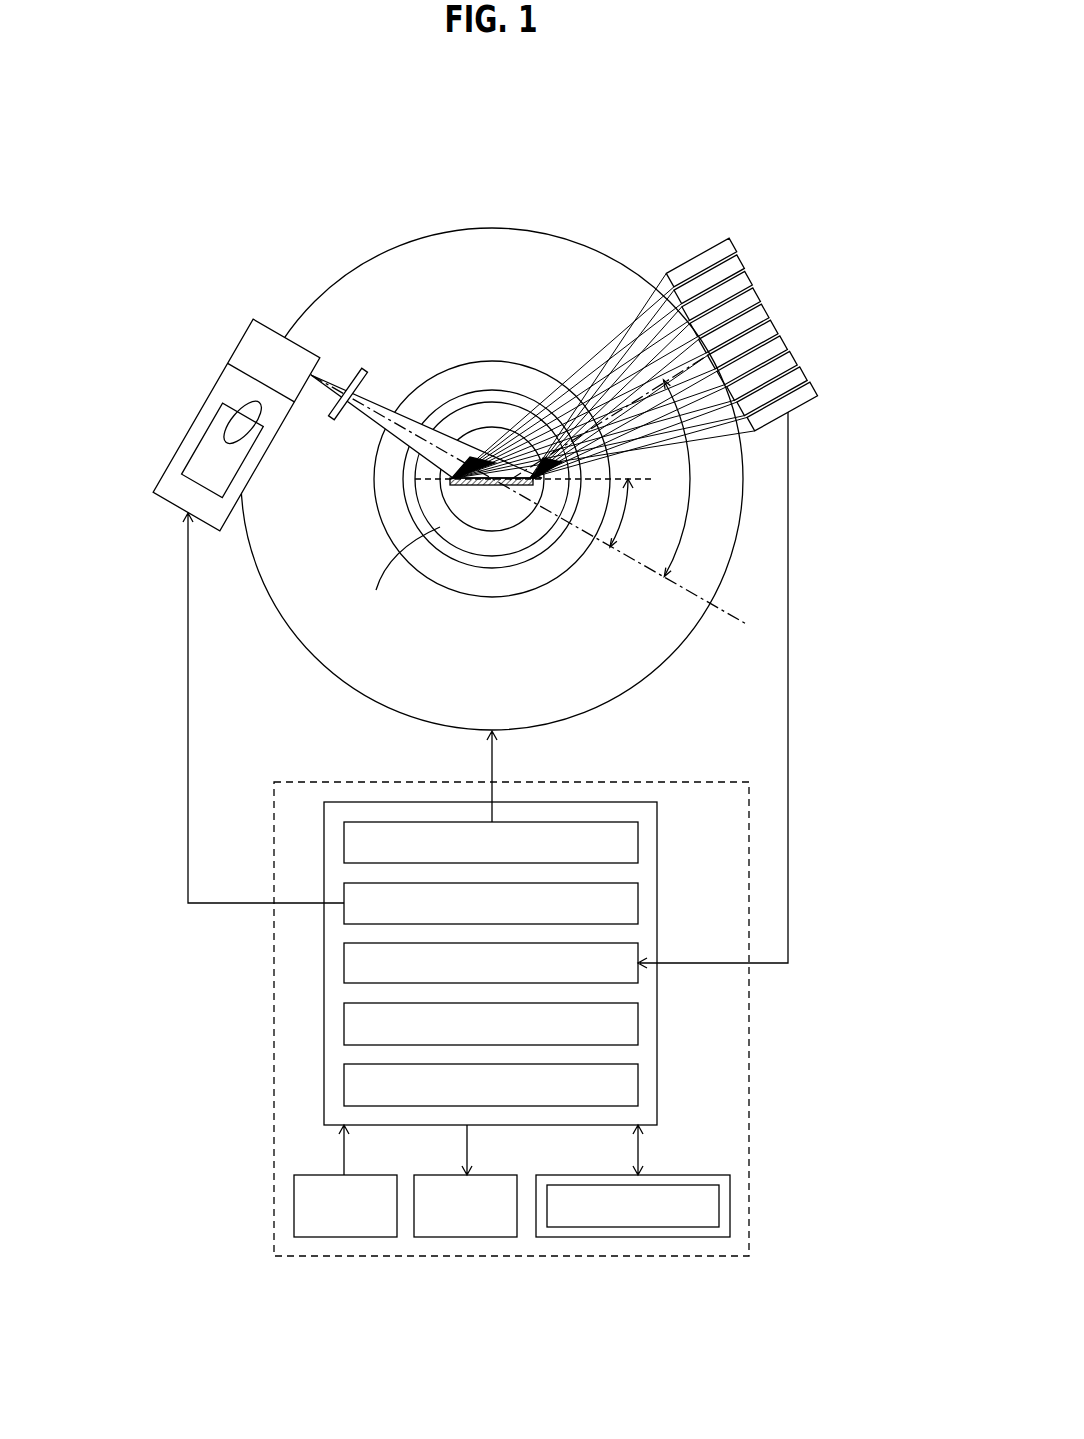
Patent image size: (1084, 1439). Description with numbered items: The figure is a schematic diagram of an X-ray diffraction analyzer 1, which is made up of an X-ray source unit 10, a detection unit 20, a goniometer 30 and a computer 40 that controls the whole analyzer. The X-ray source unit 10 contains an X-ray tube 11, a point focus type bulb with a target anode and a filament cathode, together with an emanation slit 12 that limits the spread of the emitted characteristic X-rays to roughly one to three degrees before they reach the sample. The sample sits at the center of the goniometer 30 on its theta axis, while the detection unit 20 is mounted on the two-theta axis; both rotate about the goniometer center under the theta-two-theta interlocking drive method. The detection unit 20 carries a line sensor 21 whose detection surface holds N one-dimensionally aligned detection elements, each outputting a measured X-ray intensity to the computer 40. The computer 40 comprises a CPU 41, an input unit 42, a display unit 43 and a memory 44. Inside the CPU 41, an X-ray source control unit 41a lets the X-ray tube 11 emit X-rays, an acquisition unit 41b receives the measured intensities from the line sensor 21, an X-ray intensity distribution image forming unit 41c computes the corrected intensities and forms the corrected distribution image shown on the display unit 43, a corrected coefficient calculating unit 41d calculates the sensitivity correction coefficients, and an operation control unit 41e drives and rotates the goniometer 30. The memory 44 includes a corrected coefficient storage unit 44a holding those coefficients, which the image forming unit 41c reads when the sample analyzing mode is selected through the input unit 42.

The X-ray diffraction analyzer 1 is at (493, 186).
The X-ray source unit 10 is at (245, 224).
The X-ray tube 11 is at (274, 326).
The emanation slit 12 is at (365, 370).
The detection unit 20 is at (738, 304).
The line sensor 21 is at (700, 255).
The goniometer 30 is at (652, 673).
The computer 40 is at (328, 782).
The CPU 41 is at (324, 845).
The X-ray source control unit 41a is at (657, 902).
The acquisition unit 41b is at (344, 963).
The X-ray intensity distribution image forming unit 41c is at (344, 1023).
The corrected coefficient calculating unit 41d is at (344, 1082).
The operation control unit 41e is at (657, 840).
The input unit 42 is at (342, 1237).
The display unit 43 is at (463, 1237).
The memory 44 is at (679, 1244).
The corrected coefficient storage unit 44a is at (719, 1205).